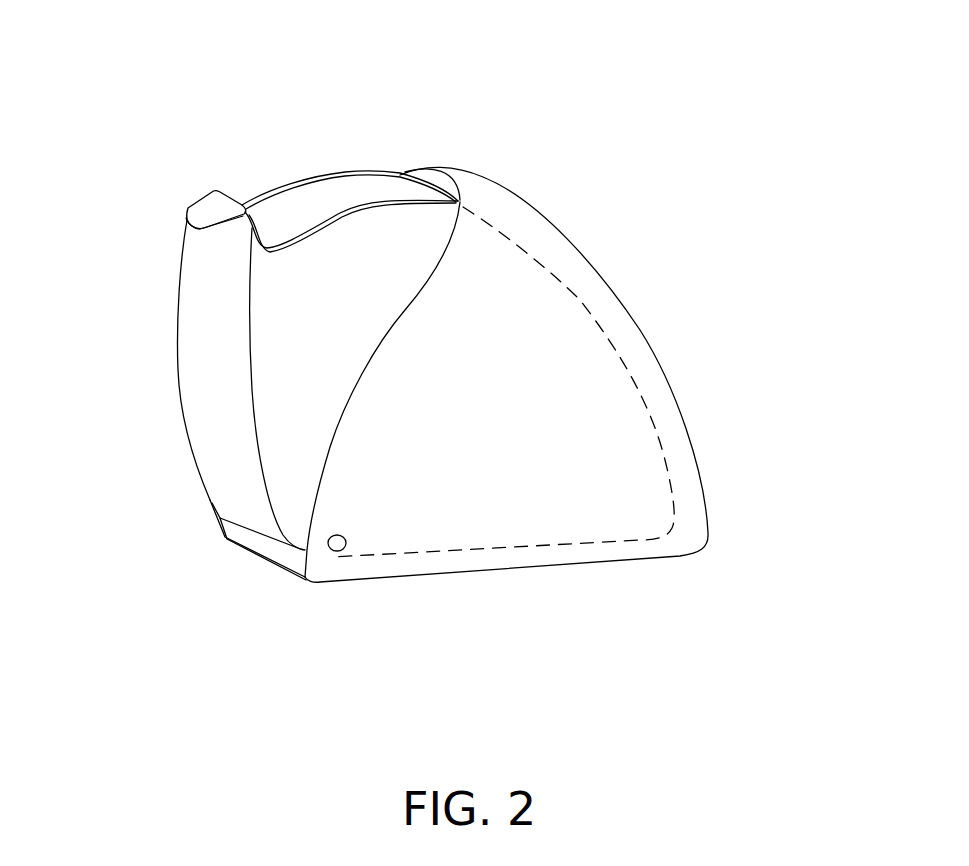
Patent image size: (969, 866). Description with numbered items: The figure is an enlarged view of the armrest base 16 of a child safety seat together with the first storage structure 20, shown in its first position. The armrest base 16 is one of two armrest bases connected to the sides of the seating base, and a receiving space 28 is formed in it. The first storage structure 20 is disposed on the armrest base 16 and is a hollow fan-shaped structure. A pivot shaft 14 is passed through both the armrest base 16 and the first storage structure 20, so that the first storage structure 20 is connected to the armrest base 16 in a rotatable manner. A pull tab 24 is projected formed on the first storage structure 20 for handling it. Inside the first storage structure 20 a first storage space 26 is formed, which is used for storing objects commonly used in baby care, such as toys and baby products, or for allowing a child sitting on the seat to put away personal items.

The pivot shaft 14 is at (342, 553).
The armrest base 16 is at (687, 425).
The first storage structure 20 is at (208, 375).
The pull tab 24 is at (207, 210).
The first storage space 26 is at (313, 199).
The receiving space 28 is at (540, 373).